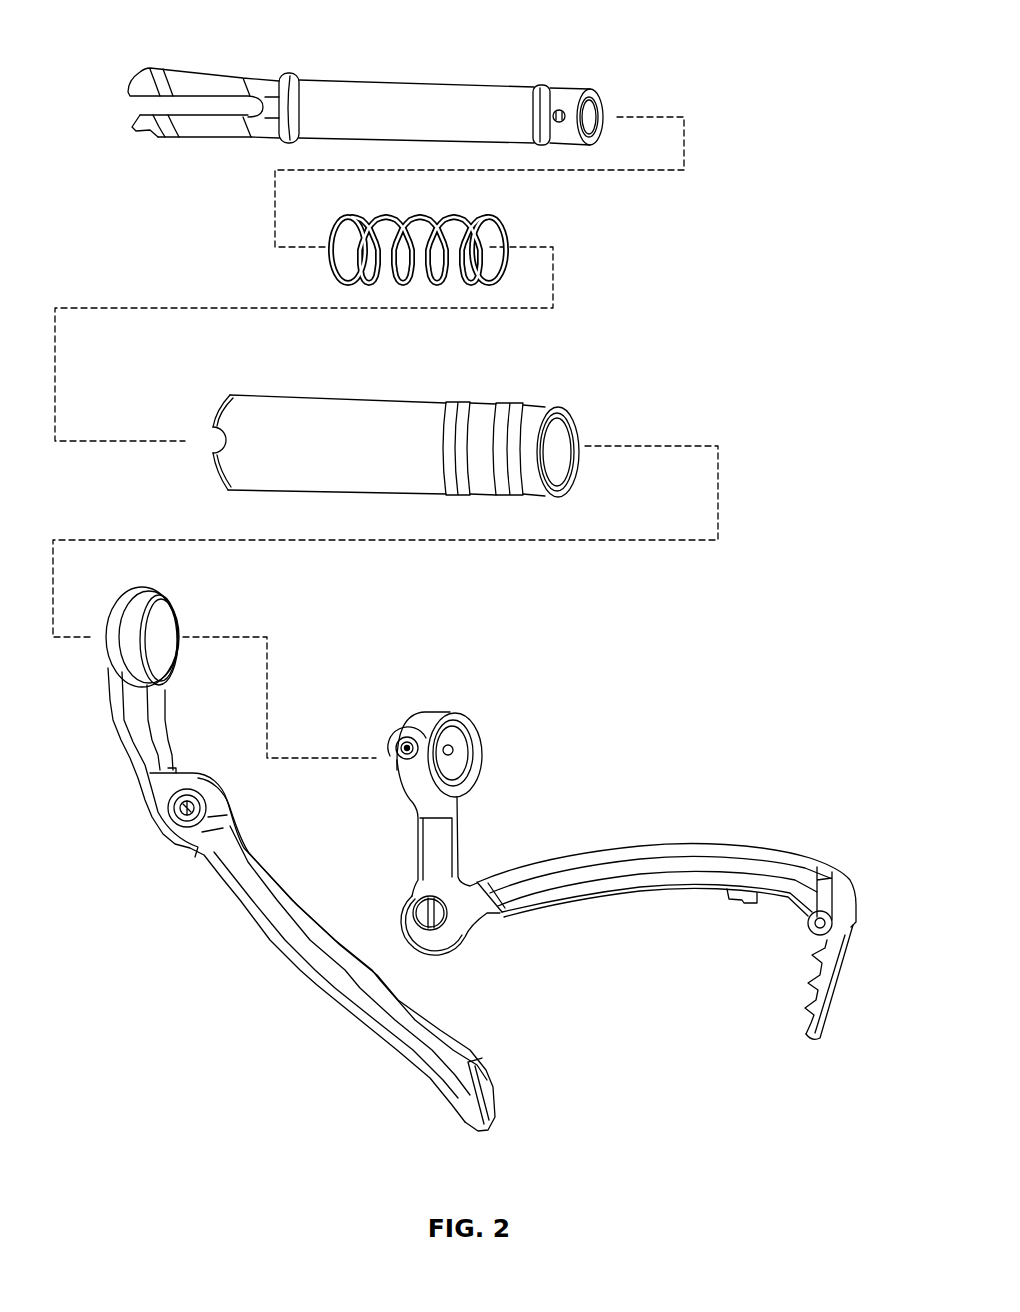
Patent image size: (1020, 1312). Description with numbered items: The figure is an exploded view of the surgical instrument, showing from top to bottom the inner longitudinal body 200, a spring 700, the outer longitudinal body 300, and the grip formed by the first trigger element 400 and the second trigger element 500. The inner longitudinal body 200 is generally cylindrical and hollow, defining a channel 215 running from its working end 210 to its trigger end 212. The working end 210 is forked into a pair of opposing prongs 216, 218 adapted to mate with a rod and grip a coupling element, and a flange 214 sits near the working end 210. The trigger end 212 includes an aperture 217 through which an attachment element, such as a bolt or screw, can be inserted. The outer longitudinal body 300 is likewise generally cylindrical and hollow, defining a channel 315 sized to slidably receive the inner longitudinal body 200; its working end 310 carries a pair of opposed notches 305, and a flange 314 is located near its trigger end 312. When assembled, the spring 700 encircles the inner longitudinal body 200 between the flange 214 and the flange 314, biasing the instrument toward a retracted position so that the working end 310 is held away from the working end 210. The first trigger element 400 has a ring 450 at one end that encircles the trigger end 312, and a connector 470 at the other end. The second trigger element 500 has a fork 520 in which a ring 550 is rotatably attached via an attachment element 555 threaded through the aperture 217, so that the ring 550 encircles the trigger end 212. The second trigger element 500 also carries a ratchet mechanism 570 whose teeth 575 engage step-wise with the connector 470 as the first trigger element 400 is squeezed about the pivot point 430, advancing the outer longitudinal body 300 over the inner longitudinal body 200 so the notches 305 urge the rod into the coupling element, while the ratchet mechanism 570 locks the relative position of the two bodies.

The inner longitudinal body 200 is at (391, 106).
The working end 210 is at (138, 80).
The trigger end 212 is at (608, 84).
The flange 214 is at (286, 73).
The channel 215 is at (600, 118).
The prong 216 is at (188, 79).
The aperture 217 is at (560, 108).
The prong 218 is at (208, 140).
The spring 700 is at (520, 208).
The outer longitudinal body 300 is at (391, 420).
The notch 305 is at (218, 441).
The working end 310 is at (292, 459).
The trigger end 312 is at (583, 435).
The flange 314 is at (515, 403).
The channel 315 is at (556, 454).
The first trigger element 400 is at (292, 878).
The pivot point 430 is at (177, 813).
The ring 450 is at (143, 593).
The connector 470 is at (488, 1130).
The second trigger element 500 is at (677, 933).
The fork 520 is at (405, 806).
The ring 550 is at (396, 727).
The attachment element 555 is at (396, 748).
The ratchet mechanism 570 is at (800, 1001).
The teeth 575 is at (807, 968).